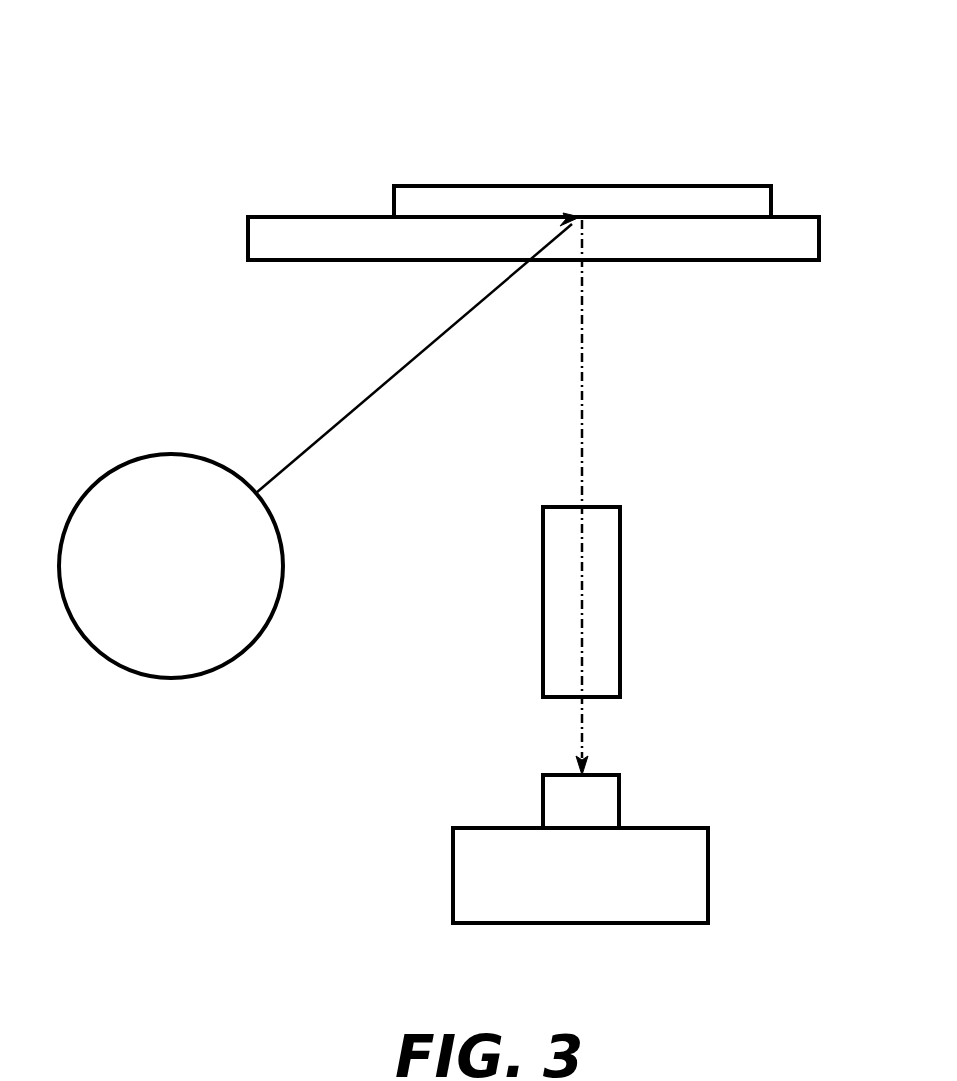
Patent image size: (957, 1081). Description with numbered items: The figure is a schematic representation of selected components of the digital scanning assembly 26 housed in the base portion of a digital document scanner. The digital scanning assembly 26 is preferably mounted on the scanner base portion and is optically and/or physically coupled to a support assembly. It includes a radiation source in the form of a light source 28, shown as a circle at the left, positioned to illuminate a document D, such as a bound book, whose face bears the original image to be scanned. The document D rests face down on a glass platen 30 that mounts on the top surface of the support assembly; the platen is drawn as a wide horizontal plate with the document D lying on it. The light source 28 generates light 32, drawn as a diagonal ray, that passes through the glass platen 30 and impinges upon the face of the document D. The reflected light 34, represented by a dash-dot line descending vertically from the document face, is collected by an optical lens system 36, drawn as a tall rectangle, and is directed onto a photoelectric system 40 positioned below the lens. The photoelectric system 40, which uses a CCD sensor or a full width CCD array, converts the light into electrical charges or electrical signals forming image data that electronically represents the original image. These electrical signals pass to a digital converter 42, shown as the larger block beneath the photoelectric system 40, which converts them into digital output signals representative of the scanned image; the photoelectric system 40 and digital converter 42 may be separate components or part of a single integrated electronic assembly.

The digital scanning assembly 26 is at (647, 135).
The light source 28 is at (82, 637).
The glass platen 30 is at (763, 262).
The light 32 is at (357, 405).
The reflected light 34 is at (582, 362).
The optical lens system 36 is at (622, 580).
The photoelectric system 40 is at (603, 775).
The digital converter 42 is at (709, 865).
The document D is at (747, 185).